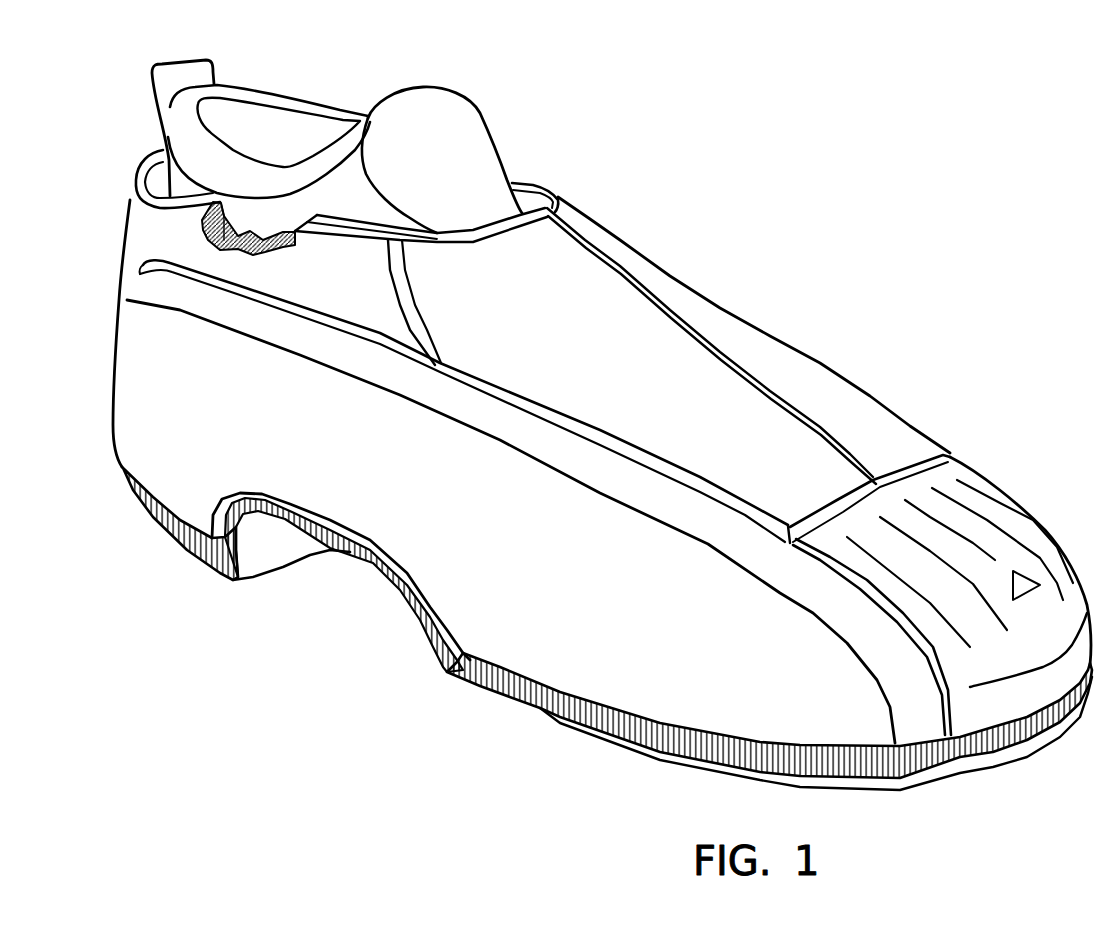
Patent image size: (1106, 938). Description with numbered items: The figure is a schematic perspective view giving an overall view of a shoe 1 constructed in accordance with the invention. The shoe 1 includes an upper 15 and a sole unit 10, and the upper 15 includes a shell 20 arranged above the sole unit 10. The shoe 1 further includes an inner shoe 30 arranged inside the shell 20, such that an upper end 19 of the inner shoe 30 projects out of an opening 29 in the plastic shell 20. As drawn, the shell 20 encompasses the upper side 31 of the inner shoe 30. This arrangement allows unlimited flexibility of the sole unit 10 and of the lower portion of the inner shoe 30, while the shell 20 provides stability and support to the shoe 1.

The shoe 1 is at (779, 191).
The sole unit 10 is at (627, 730).
The upper 15 is at (787, 373).
The upper end 19 is at (198, 96).
The shell 20 is at (497, 640).
The opening 29 is at (533, 203).
The inner shoe 30 is at (483, 146).
The upper side 31 is at (240, 221).